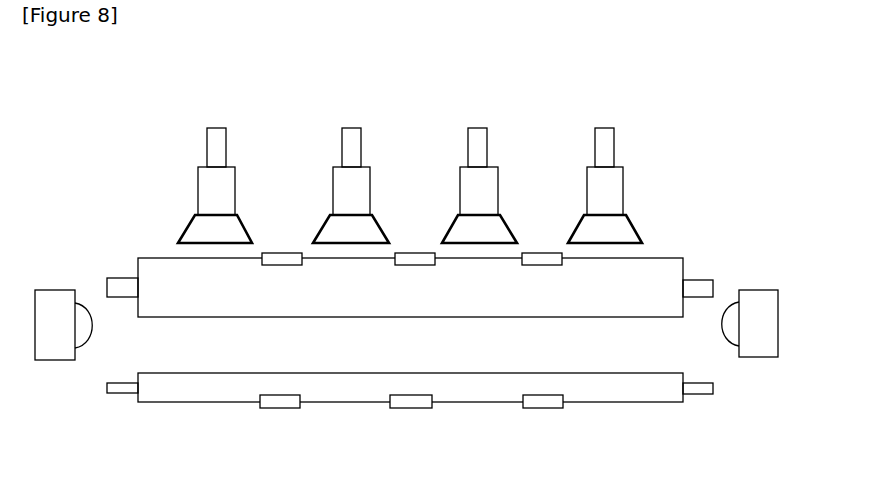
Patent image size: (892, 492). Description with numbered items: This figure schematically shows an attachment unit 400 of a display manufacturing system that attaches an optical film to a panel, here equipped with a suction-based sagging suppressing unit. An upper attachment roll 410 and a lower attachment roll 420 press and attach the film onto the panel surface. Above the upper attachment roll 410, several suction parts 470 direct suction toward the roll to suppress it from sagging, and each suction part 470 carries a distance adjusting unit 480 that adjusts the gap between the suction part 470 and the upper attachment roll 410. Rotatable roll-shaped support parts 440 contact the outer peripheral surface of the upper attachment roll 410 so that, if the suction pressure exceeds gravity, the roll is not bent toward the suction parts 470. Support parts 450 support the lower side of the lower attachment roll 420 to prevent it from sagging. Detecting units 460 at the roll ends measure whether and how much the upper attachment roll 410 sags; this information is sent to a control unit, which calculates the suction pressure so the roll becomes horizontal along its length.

The attachment unit 400 is at (432, 112).
The upper attachment roll 410 is at (673, 275).
The lower attachment roll 420 is at (673, 397).
The support part 440 is at (284, 257).
The support part 450 is at (544, 400).
The detecting unit 460 is at (770, 335).
The suction part 470 is at (623, 205).
The distance adjusting unit 480 is at (613, 152).